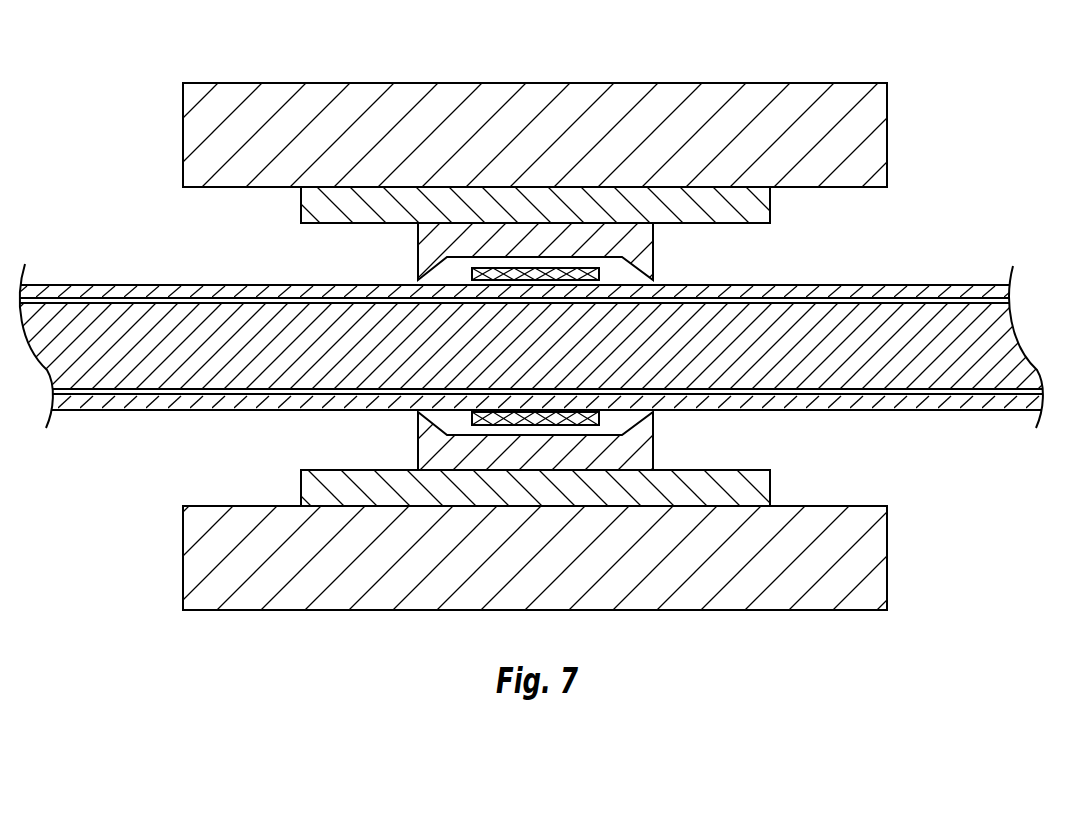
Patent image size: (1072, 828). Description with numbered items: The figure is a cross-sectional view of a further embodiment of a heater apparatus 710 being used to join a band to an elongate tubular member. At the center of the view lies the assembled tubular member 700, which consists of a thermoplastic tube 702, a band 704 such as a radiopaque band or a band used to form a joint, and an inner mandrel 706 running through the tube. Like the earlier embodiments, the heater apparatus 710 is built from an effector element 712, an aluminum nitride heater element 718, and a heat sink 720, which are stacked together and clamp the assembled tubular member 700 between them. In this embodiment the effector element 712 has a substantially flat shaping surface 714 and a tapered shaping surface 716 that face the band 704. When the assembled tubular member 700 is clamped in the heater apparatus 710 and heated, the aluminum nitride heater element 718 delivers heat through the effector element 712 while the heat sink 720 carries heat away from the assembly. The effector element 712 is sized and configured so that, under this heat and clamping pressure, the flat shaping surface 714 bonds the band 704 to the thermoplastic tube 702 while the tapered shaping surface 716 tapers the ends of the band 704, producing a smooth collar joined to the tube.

The assembled tubular member 700 is at (63, 226).
The thermoplastic tube 702 is at (185, 285).
The band 704 is at (596, 273).
The inner mandrel 706 is at (857, 327).
The heater apparatus 710 is at (517, 519).
The effector element 712 is at (640, 437).
The substantially flat shaping surface 714 is at (534, 437).
The tapered shaping surface 716 is at (634, 419).
The aluminum nitride heater element 718 is at (768, 482).
The heat sink 720 is at (880, 557).